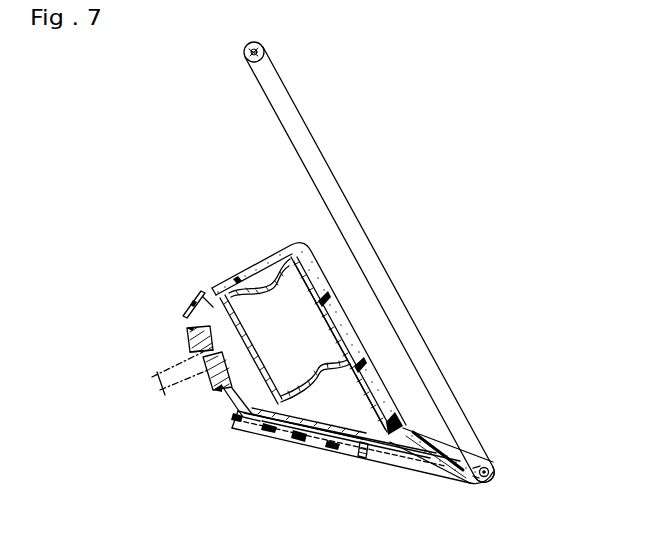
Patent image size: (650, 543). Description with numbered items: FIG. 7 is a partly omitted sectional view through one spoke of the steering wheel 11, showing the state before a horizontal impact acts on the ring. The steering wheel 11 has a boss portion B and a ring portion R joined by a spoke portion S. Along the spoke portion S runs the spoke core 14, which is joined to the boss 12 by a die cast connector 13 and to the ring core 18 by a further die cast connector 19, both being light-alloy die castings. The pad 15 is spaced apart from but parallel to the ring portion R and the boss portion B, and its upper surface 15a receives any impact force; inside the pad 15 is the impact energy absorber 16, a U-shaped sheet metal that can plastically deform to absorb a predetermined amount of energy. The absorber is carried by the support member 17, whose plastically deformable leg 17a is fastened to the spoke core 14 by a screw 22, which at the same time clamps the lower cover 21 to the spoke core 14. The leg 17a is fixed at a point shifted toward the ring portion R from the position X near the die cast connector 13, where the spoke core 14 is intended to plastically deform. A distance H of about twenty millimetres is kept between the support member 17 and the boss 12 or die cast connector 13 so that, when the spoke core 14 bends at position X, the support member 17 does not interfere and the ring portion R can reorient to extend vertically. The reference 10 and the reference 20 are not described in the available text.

The pivot axis 10 is at (150, 387).
The steering wheel 11 is at (402, 71).
The boss 12 is at (207, 371).
The die cast connector 13 is at (190, 343).
The spoke core 14 is at (317, 437).
The pad 15 is at (334, 282).
The upper surface 15a is at (343, 321).
The impact energy absorber 16 is at (270, 287).
The support member 17 is at (265, 363).
The leg 17a is at (283, 440).
The ring core 18 is at (492, 457).
The die cast connector 19 is at (484, 484).
The connecting bar 20 is at (443, 450).
The lower cover 21 is at (183, 318).
The screw 22 is at (364, 453).
The ring portion R is at (295, 123).
The distance H is at (188, 333).
The position X is at (231, 393).
The boss portion B is at (232, 431).
The spoke portion S is at (424, 475).